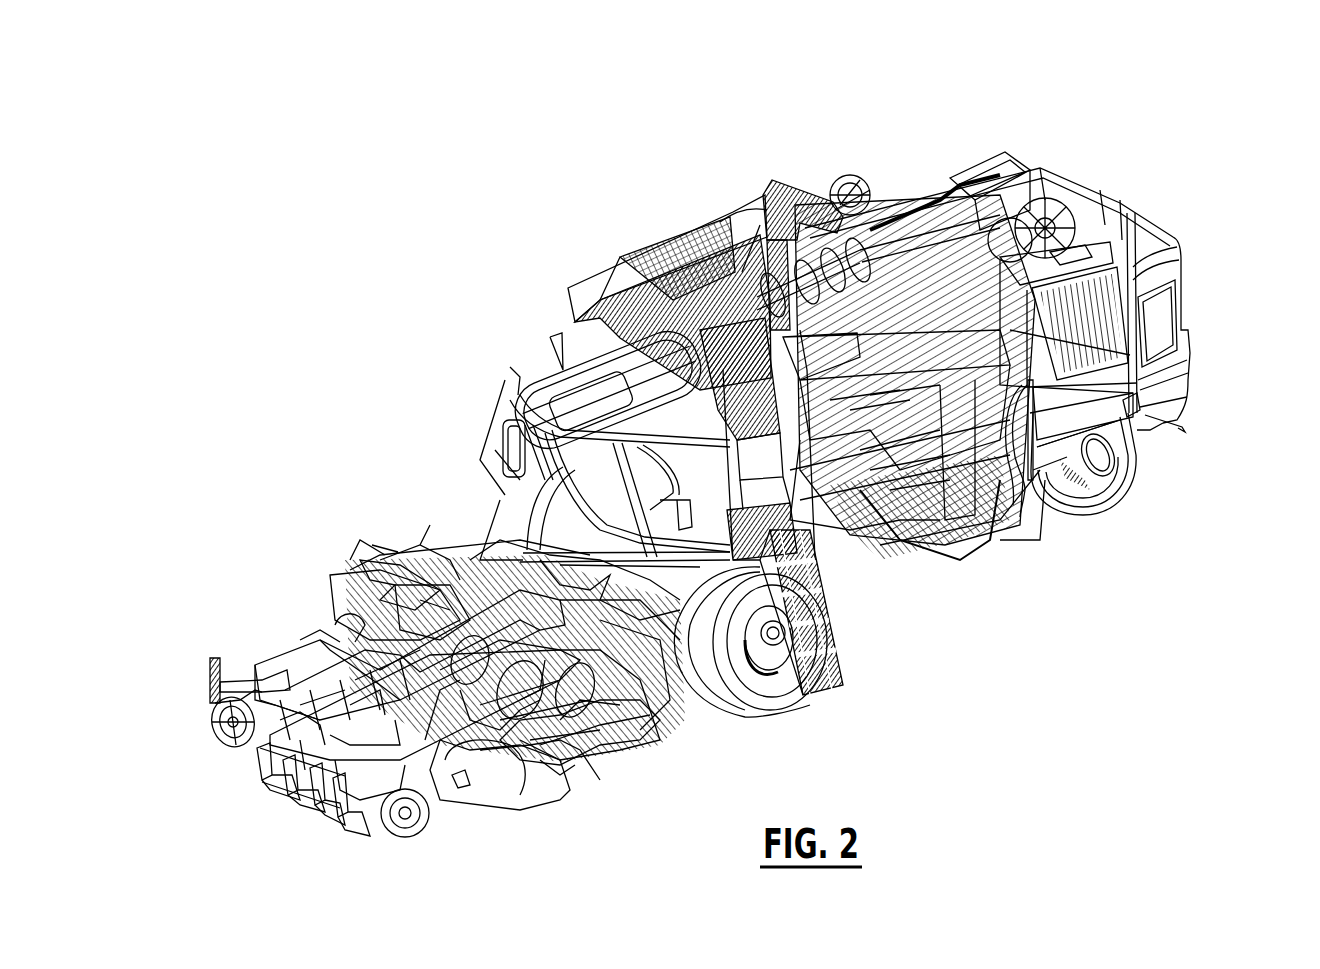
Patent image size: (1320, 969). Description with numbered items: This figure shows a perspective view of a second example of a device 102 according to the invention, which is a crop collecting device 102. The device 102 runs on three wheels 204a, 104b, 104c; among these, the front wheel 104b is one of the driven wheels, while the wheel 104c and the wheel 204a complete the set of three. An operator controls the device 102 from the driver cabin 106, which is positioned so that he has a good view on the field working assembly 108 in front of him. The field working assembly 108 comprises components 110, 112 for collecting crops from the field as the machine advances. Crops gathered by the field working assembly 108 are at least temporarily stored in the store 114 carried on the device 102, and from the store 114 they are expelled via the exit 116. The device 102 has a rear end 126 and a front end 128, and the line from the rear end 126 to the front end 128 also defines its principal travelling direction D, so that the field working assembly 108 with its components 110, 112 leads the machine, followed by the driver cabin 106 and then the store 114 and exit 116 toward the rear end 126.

The device 102 is at (574, 234).
The store 114 is at (731, 192).
The rear end 126 is at (1130, 192).
The driver cabin 106 is at (527, 364).
The wheel 104c is at (502, 507).
The component 112 is at (356, 550).
The component 110 is at (249, 630).
The front end 128 is at (267, 813).
The field working assembly 108 is at (567, 779).
The front wheel 104b is at (872, 648).
The exit 116 is at (1020, 517).
The wheel 204a is at (1128, 497).